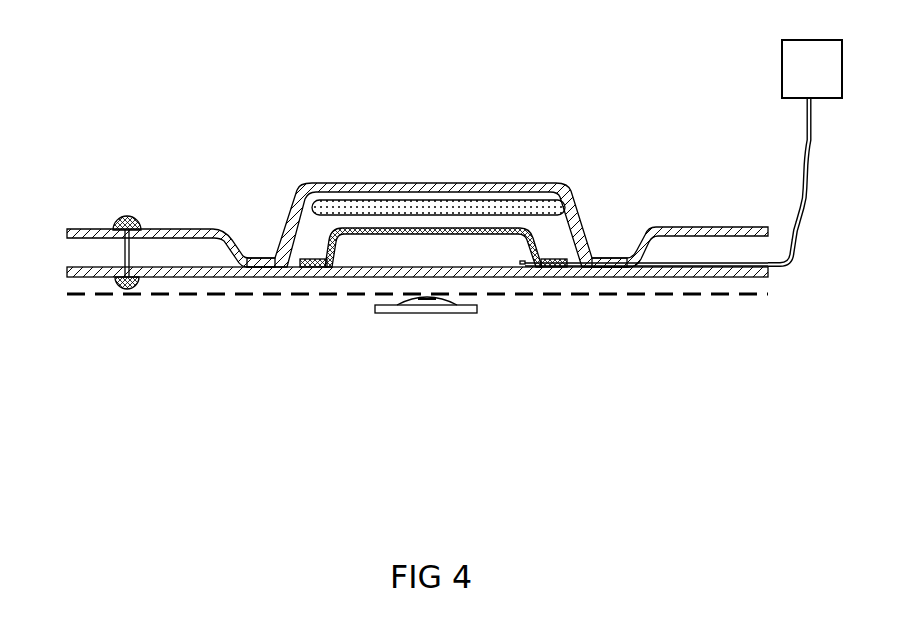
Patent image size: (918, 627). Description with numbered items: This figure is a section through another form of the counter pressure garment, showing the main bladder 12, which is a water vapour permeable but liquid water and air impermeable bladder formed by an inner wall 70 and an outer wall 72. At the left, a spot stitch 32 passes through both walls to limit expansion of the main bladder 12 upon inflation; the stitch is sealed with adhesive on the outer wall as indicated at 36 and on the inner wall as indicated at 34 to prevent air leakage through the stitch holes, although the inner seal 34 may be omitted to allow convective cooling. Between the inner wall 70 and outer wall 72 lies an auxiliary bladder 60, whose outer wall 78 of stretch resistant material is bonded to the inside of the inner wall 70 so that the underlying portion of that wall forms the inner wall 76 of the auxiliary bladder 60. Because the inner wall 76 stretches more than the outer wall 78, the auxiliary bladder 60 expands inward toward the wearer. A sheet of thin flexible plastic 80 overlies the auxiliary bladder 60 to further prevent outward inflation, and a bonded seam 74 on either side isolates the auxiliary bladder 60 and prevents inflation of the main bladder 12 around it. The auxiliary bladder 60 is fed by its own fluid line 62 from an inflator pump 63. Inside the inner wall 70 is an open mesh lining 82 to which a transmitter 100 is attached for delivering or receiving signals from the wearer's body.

The main bladder 12 is at (417, 237).
The spot stitch 32 is at (76, 241).
The seal on inner wall 34 is at (127, 289).
The seal on outer wall 36 is at (127, 217).
The auxiliary bladder 60 is at (466, 315).
The fluid line 62 is at (790, 265).
The inflator pump 63 is at (805, 68).
The inner wall 70 is at (200, 279).
The outer wall 72 is at (188, 230).
The bonded seam 74 is at (263, 258).
The inner wall of auxiliary bladder 76 is at (503, 280).
The outer wall of auxiliary bladder 78 is at (362, 233).
The sheet of thin flexible plastic 80 is at (357, 200).
The lining 82 is at (244, 296).
The transmitter 100 is at (428, 315).